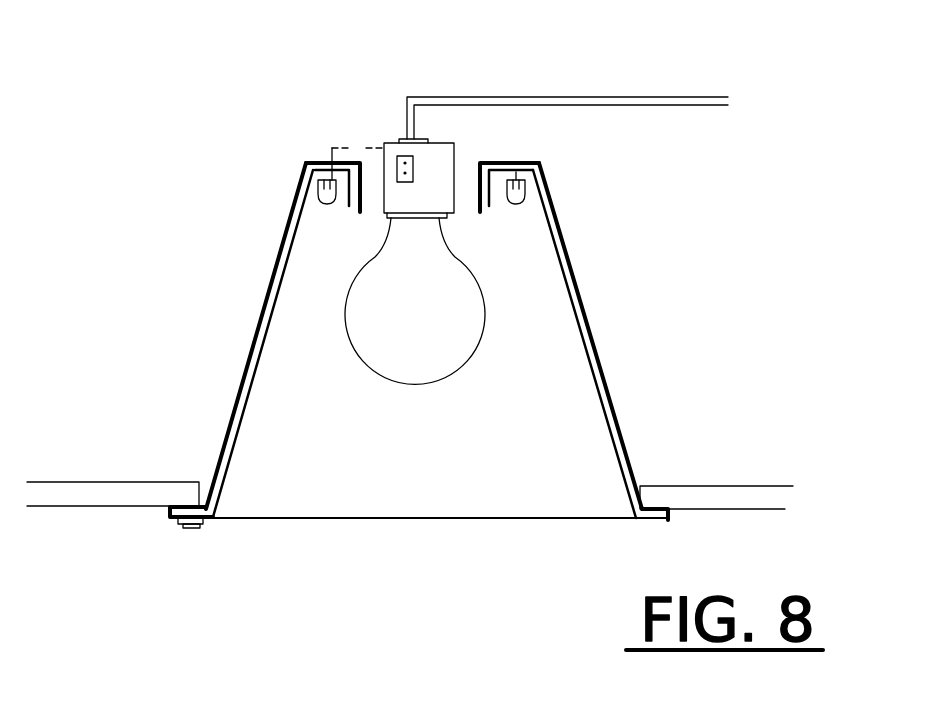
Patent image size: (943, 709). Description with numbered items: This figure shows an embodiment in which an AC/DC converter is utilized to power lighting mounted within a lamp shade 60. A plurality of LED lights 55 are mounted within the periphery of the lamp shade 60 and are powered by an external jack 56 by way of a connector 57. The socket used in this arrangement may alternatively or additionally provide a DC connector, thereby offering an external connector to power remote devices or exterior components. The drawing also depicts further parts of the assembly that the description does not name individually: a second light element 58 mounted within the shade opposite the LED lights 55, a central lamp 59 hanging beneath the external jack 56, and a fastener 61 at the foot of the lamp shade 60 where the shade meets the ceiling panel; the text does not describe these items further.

The LED lights 55 is at (508, 213).
The external jack 56 is at (420, 158).
The connector 57 is at (367, 139).
The left lamp socket 58 is at (335, 213).
The light bulb 59 is at (432, 335).
The lamp shade 60 is at (628, 416).
The fastening clamp 61 is at (193, 531).